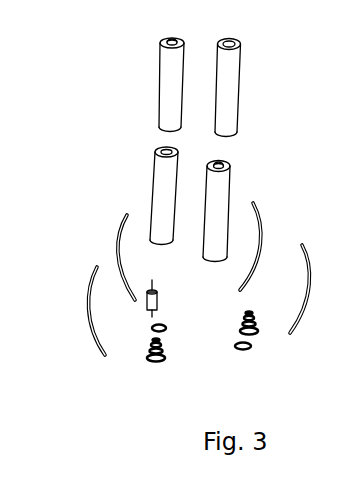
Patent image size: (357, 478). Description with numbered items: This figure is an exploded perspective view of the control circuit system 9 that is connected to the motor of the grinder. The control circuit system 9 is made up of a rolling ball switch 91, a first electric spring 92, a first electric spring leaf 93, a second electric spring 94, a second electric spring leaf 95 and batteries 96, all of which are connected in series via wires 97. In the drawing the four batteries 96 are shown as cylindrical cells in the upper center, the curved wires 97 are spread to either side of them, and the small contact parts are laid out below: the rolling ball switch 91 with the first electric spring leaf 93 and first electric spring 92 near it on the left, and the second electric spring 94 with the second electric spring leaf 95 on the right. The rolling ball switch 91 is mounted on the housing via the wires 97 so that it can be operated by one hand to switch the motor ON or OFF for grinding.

The control circuit system 9 is at (125, 147).
The rolling ball switch 91 is at (148, 305).
The first electric spring 92 is at (150, 355).
The first electric spring leaf 93 is at (165, 332).
The second electric spring 94 is at (257, 330).
The second electric spring leaf 95 is at (243, 350).
The batteries 96 is at (230, 176).
The wires 97 is at (92, 282).